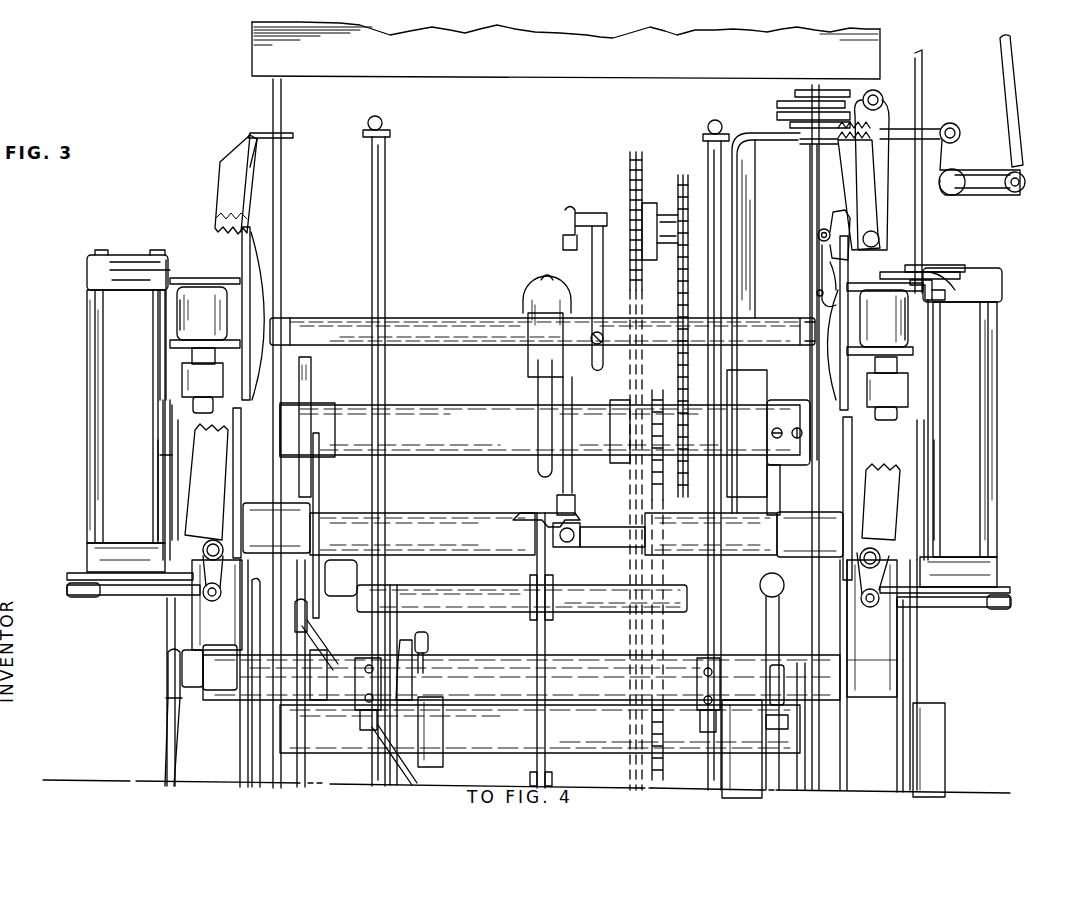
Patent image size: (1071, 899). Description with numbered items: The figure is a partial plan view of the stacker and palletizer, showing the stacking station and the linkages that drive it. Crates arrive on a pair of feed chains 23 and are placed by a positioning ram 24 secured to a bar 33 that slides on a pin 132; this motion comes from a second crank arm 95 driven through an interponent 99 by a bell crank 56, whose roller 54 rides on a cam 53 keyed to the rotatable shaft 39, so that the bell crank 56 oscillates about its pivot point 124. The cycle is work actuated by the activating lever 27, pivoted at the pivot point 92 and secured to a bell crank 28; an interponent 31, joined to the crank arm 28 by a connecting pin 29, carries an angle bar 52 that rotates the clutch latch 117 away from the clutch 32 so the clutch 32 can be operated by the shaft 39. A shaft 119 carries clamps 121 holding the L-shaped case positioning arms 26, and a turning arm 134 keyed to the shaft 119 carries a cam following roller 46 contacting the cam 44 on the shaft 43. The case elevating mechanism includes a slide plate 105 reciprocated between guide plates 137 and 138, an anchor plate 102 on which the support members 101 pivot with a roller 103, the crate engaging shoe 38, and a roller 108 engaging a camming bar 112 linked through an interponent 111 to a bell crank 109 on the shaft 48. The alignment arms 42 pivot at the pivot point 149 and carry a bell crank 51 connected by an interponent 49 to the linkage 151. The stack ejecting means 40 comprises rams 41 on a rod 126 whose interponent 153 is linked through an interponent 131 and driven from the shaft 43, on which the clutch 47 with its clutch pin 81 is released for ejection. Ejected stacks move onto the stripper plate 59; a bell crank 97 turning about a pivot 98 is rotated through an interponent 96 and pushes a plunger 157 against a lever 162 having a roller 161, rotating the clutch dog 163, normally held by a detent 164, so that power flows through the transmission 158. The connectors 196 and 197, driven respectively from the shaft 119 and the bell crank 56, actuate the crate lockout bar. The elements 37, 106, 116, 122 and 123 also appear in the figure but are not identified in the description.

The stripper plate 59 is at (880, 46).
The case positioning arm 26 is at (386, 126).
The roller 161 is at (882, 95).
The clutch dog lever 162 is at (885, 126).
The plunger 157 is at (930, 128).
The pivot 98 is at (955, 195).
The bell crank 97 is at (975, 170).
The interponent 96 is at (1013, 94).
The clutch dog 163 is at (832, 222).
The detent 164 is at (822, 258).
The transmission 158 is at (767, 133).
The bell crank 109 is at (87, 273).
The interponent 111 is at (940, 272).
The camming bar 112 is at (984, 268).
The roller 108 is at (918, 272).
The bracket 116 is at (942, 292).
The shaft 48 is at (90, 502).
The block 37 is at (178, 322).
The roller 103 is at (184, 312).
The support member 101 is at (186, 346).
The anchor plate 102 is at (190, 378).
The guide plate 138 is at (164, 392).
The slide plate 105 is at (166, 415).
The plate 106 is at (172, 432).
The guide plate 137 is at (163, 480).
The crate engaging shoe 38 is at (243, 292).
The positioning arm 42 is at (216, 210).
The pivot point 149 is at (202, 548).
The bell crank 51 is at (200, 580).
The linkage 151 is at (68, 576).
The interponent 49 is at (146, 596).
The stack ejecting means 40 is at (236, 476).
The cam 53 is at (313, 380).
The roller 54 is at (298, 468).
The pivot point 92 is at (416, 320).
The shaft 39 is at (446, 406).
The clutch 32 is at (768, 396).
The clutch latch 117 is at (773, 490).
The bell crank 56 is at (528, 300).
The activating lever 27 is at (539, 400).
The interponent 31 is at (573, 400).
The connecting pin 29 is at (580, 210).
The bell crank 28 is at (600, 280).
The second crank arm 95 is at (642, 170).
The ram 41 is at (312, 510).
The feed chain 23 is at (396, 513).
The positioning ram 24 is at (530, 513).
The angle bar 52 is at (604, 525).
The bar 33 is at (546, 645).
The pivot point 124 is at (360, 571).
The rod 126 is at (246, 627).
The shaft 119 is at (478, 668).
The shaft 43 is at (478, 754).
The cam 44 is at (440, 765).
The cam following roller 46 is at (430, 640).
The turning arm 134 is at (402, 640).
The clamp 121 is at (356, 706).
The bar 123 is at (242, 731).
The bar 122 is at (252, 752).
The connector 196 is at (168, 738).
The connector 197 is at (308, 623).
The interponent 99 is at (320, 641).
The clutch pin 81 is at (766, 621).
The pin 132 is at (778, 665).
The clutch 47 is at (724, 772).
The interponent 153 is at (945, 725).
The interponent 131 is at (306, 781).